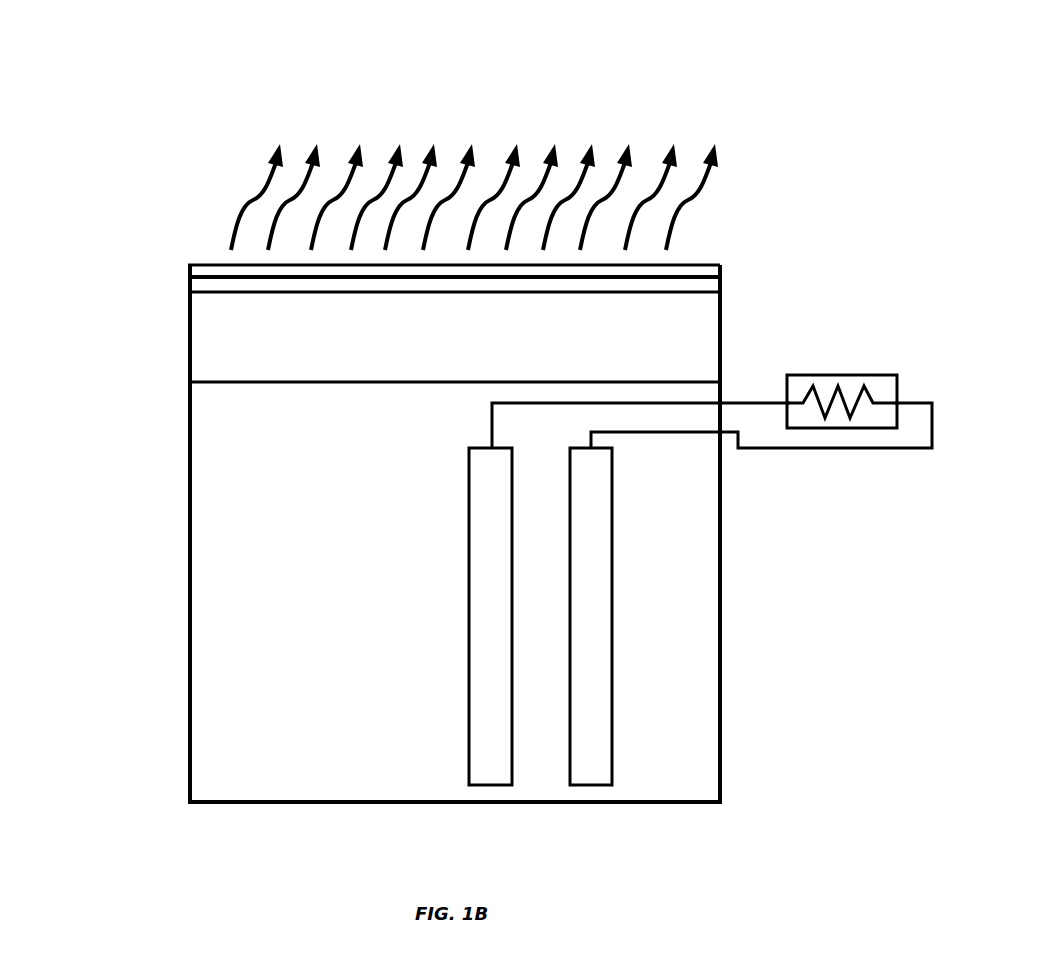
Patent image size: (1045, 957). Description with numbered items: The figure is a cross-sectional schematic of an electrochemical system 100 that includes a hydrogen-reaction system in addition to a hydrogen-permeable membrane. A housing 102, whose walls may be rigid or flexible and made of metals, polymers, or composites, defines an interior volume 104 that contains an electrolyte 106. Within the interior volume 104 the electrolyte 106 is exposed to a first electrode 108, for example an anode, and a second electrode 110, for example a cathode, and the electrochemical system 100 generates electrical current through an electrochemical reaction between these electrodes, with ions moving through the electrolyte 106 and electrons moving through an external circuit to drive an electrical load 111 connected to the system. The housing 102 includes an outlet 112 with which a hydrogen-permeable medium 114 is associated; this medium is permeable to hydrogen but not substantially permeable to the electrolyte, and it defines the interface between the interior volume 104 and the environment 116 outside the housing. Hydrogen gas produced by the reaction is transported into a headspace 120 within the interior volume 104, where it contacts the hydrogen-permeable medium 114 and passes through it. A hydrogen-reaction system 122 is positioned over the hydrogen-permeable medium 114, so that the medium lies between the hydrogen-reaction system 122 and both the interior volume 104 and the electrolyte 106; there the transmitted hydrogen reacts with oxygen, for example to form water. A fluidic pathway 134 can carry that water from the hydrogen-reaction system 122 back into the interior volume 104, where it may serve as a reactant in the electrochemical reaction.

The electrochemical system 100 is at (60, 86).
The housing 102 is at (190, 770).
The interior volume 104 is at (250, 470).
The electrolyte 106 is at (328, 681).
The first electrode 108 is at (490, 648).
The second electrode 110 is at (595, 645).
The electrical load 111 is at (840, 375).
The outlet 112 is at (680, 303).
The hydrogen-permeable medium 114 is at (203, 285).
The environment 116 is at (470, 97).
The headspace 120 is at (107, 422).
The hydrogen-reaction system 122 is at (205, 272).
The fluidic pathway 134 is at (477, 346).